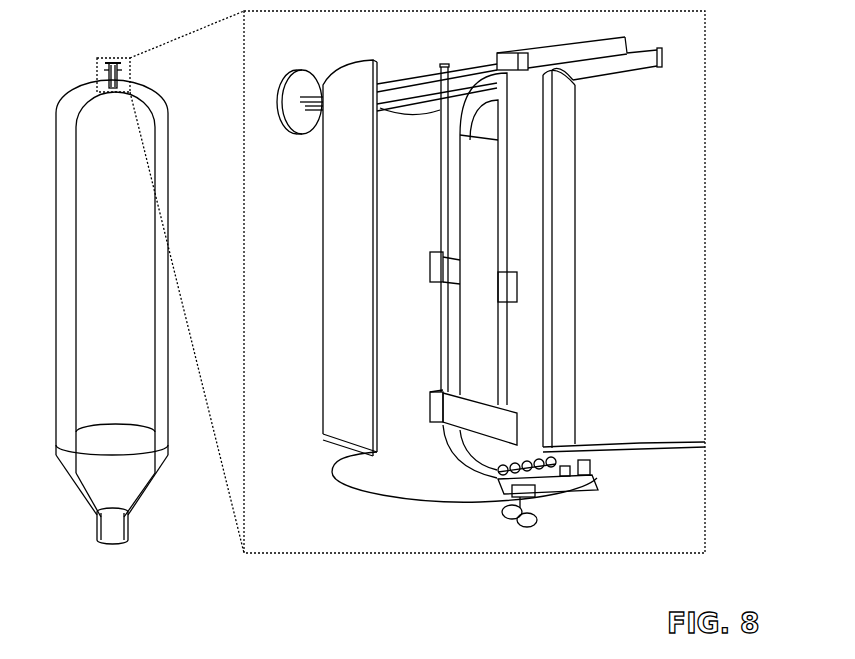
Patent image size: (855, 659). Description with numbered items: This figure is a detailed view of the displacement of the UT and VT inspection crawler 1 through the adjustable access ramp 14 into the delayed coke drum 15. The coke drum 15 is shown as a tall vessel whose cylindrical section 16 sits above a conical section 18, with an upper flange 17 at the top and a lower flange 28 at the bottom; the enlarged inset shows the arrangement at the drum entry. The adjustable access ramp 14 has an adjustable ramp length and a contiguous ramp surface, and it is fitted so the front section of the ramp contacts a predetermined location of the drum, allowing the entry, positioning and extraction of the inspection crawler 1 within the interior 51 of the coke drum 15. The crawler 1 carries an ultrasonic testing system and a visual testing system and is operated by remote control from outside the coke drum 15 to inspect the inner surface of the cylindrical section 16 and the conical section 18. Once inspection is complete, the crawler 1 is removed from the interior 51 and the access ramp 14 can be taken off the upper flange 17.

The UT and VT inspection crawler 1 is at (582, 491).
The adjustable access ramp 14 is at (478, 366).
The coke drum 15 is at (157, 98).
The cylindrical section 16 is at (170, 206).
The upper flange 17 is at (567, 204).
The conical section 18 is at (150, 484).
The lower flange 28 is at (128, 532).
The interior 51 is at (354, 306).